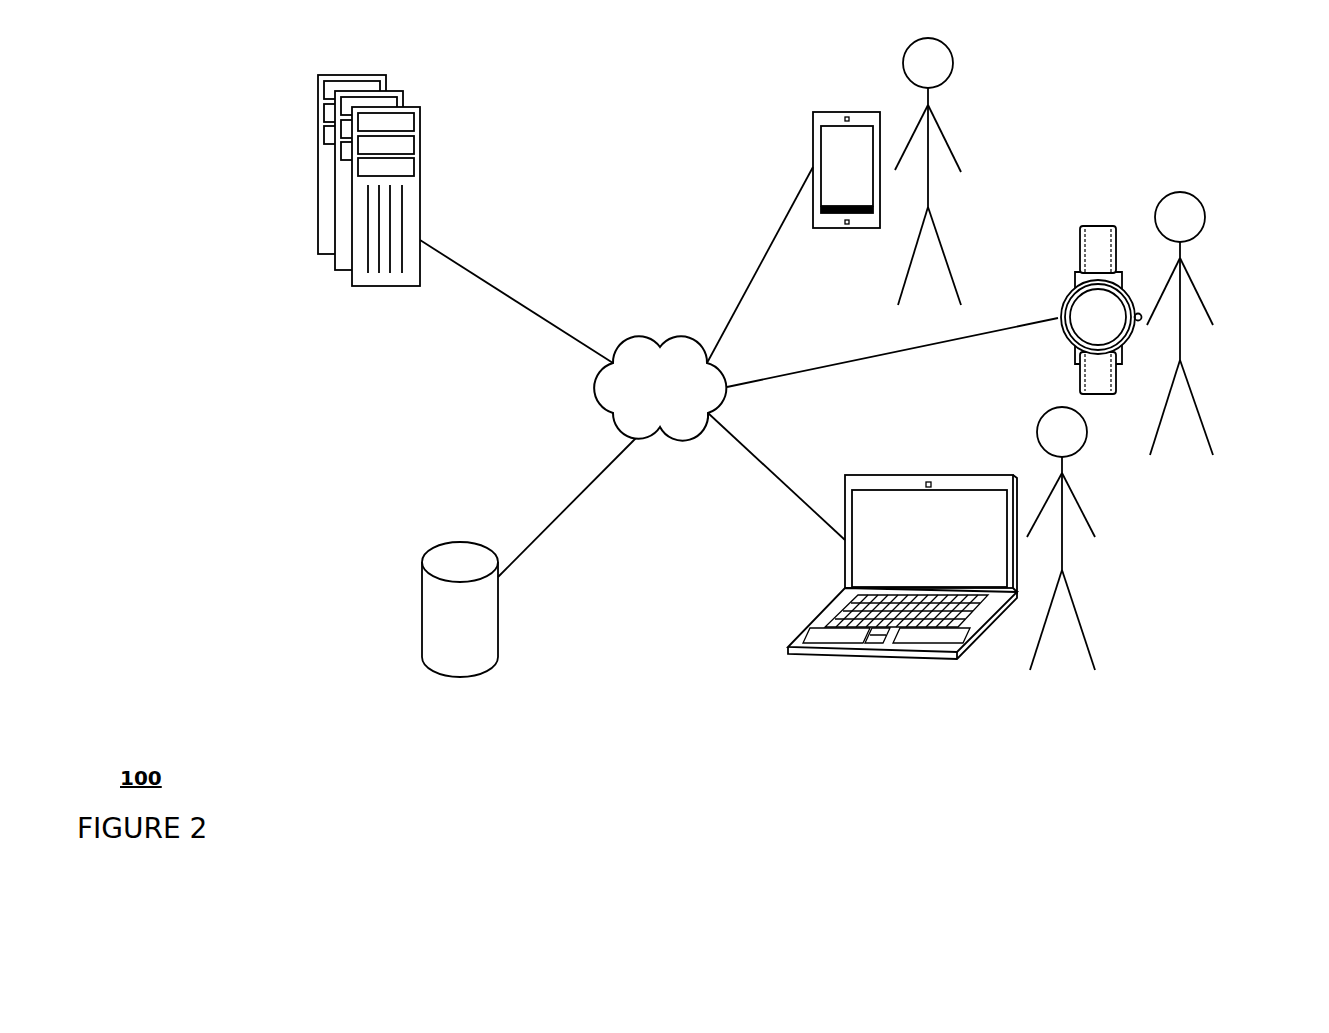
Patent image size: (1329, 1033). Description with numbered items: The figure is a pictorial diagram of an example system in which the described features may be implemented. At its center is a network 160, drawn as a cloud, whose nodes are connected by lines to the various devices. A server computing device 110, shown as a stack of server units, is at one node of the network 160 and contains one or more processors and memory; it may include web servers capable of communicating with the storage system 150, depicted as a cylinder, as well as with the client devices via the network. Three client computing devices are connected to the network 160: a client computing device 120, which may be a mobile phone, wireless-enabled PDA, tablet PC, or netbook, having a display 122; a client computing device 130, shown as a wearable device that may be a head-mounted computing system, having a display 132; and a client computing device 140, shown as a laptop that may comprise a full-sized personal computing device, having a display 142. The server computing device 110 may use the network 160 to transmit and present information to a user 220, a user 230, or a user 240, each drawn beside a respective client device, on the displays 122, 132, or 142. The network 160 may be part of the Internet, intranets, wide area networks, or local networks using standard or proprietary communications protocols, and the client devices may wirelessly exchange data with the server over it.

The server computing device 110 is at (421, 148).
The client computing device 120 is at (813, 140).
The display 122 is at (821, 167).
The client computing device 130 is at (1072, 282).
The display 132 is at (1066, 347).
The client computing device 140 is at (845, 540).
The display 142 is at (852, 578).
The storage system 150 is at (498, 628).
The network 160 is at (739, 372).
The user 220 is at (957, 160).
The user 230 is at (1213, 313).
The user 240 is at (1092, 527).